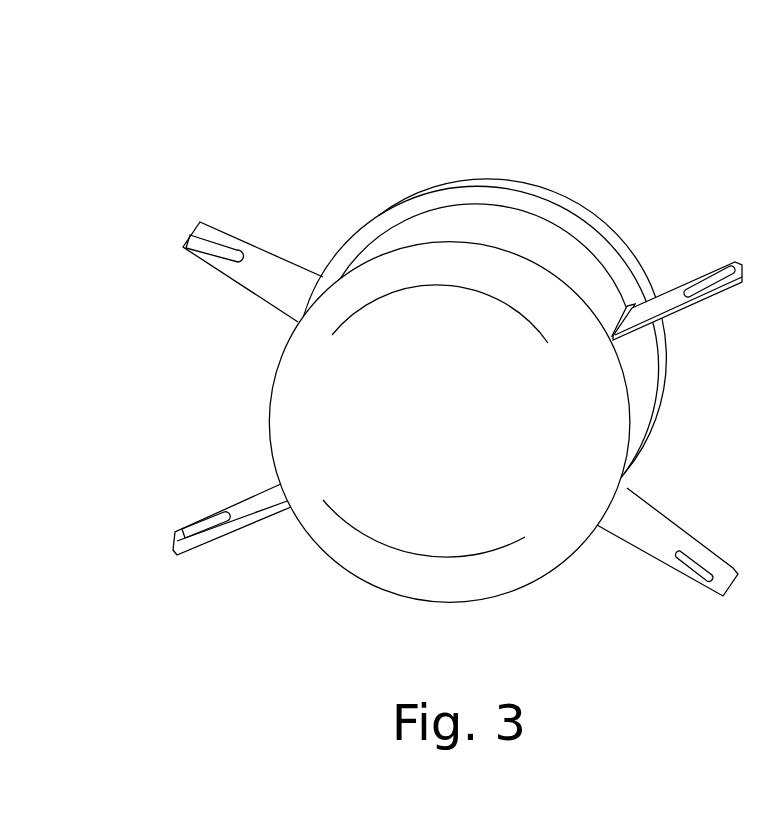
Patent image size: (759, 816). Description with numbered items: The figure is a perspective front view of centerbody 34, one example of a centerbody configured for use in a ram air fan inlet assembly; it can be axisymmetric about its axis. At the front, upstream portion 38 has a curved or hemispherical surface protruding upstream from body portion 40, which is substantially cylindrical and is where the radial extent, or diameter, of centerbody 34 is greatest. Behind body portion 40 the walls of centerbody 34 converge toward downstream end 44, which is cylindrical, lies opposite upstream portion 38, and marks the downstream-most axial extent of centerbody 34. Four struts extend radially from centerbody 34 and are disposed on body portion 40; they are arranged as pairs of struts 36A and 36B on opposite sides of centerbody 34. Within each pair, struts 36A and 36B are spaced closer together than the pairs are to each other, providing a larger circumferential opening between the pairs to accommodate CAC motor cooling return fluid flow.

The centerbody 34 is at (249, 131).
The struts 36A is at (225, 277).
The struts 36B is at (678, 307).
The upstream portion 38 is at (343, 570).
The body portion 40 is at (398, 232).
The downstream end 44 is at (545, 188).